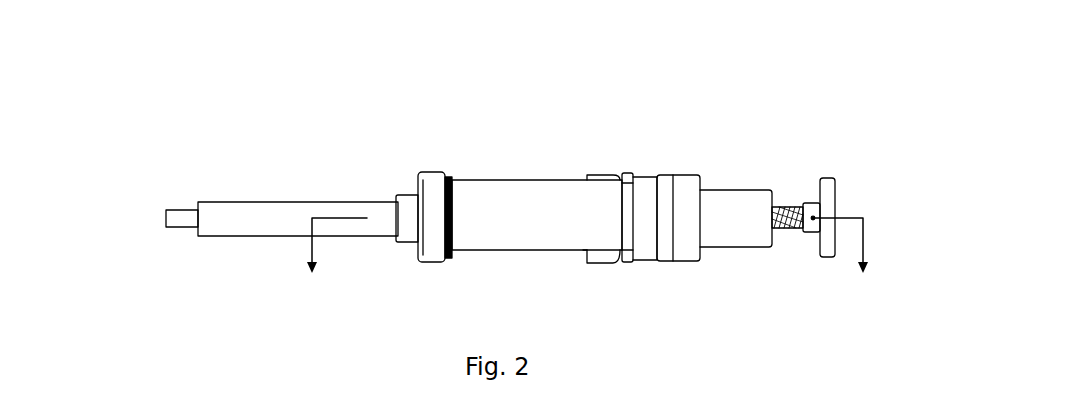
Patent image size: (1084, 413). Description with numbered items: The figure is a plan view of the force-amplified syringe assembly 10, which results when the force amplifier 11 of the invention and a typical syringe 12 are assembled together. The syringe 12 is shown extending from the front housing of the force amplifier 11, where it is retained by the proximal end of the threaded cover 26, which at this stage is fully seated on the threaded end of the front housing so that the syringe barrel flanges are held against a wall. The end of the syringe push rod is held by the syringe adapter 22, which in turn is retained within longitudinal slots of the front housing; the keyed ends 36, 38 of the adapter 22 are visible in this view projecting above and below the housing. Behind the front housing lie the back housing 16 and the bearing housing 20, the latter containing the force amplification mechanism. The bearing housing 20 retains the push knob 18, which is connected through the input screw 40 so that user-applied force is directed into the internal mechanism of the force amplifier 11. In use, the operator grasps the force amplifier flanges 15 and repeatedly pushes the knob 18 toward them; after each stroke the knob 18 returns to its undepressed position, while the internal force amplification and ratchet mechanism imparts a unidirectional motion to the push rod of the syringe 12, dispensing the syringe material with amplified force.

The force-amplified syringe assembly 10 is at (506, 114).
The force amplifier 11 is at (529, 172).
The syringe 12 is at (305, 199).
The force amplifier flanges 15 is at (628, 173).
The back housing 16 is at (648, 232).
The push knob 18 is at (827, 197).
The bearing housing 20 is at (738, 232).
The syringe adapter 22 is at (577, 258).
The threaded cover 26 is at (433, 203).
The adapter keyed end 36 is at (600, 172).
The adapter keyed end 38 is at (600, 263).
The input screw 40 is at (787, 207).